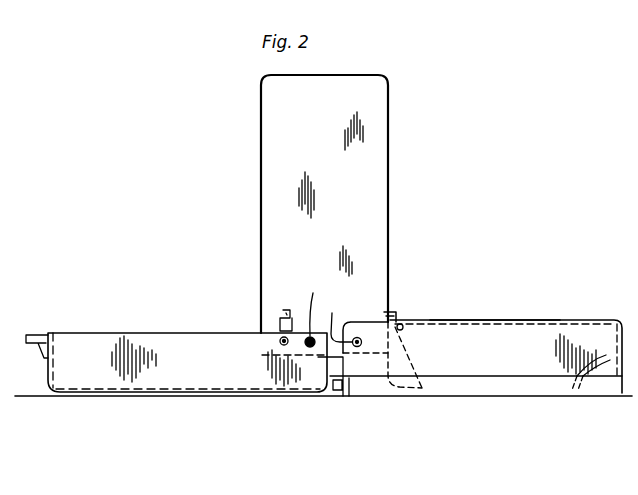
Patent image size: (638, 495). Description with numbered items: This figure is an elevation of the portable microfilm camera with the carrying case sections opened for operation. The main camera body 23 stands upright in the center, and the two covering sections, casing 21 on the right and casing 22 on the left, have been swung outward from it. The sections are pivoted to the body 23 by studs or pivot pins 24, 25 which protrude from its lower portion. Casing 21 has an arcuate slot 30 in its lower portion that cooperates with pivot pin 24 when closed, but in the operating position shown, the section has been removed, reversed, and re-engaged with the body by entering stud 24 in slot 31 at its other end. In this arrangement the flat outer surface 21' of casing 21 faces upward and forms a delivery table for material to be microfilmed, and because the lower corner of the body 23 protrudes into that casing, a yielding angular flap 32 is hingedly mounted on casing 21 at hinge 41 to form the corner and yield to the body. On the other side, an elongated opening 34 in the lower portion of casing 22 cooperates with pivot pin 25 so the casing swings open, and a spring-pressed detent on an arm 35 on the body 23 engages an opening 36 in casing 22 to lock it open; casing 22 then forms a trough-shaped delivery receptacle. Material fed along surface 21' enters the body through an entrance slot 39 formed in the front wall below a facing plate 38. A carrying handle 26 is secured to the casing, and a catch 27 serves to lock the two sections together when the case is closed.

The camera body 23 is at (372, 178).
The casing section 22 is at (197, 343).
The casing section 21 is at (476, 342).
The flat outer surface 21' is at (495, 298).
The arcuate slot 30 is at (590, 325).
The catch 27 is at (30, 334).
The arm 35 is at (278, 322).
The pivot pin 25 is at (308, 306).
The slot 31 is at (338, 319).
The pivot pin 24 is at (358, 336).
The elongated opening 34 is at (310, 347).
The opening 36 is at (281, 345).
The carrying handle 26 is at (330, 397).
The yielding angular flap 32 is at (392, 395).
The facing plate 38 is at (390, 293).
The entrance slot 39 is at (392, 308).
The hinge 41 is at (412, 330).